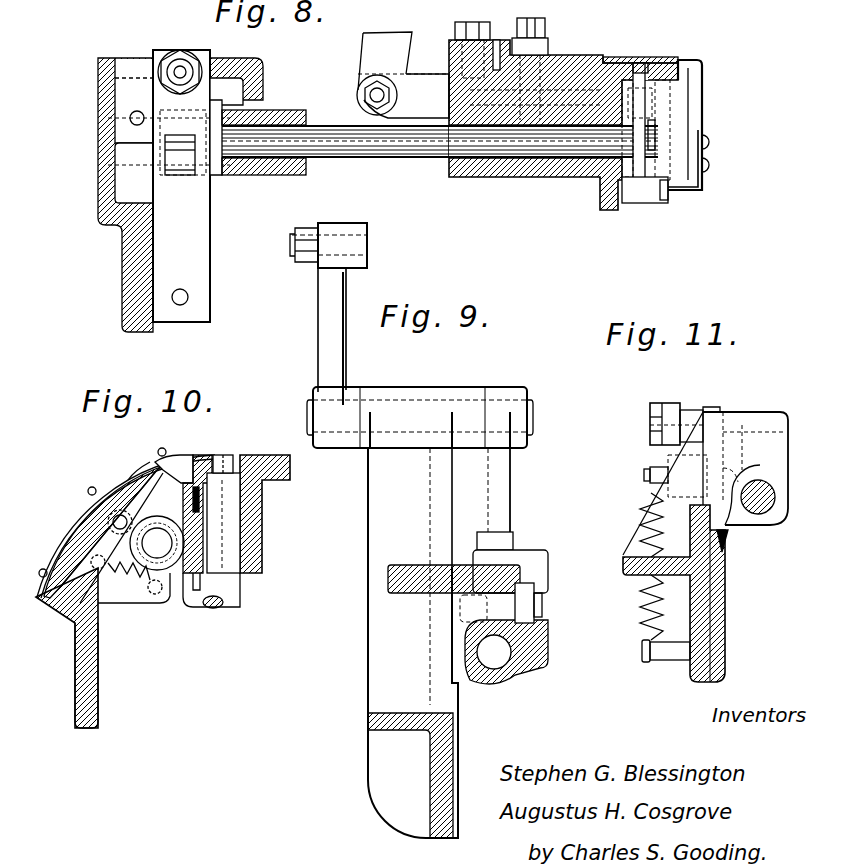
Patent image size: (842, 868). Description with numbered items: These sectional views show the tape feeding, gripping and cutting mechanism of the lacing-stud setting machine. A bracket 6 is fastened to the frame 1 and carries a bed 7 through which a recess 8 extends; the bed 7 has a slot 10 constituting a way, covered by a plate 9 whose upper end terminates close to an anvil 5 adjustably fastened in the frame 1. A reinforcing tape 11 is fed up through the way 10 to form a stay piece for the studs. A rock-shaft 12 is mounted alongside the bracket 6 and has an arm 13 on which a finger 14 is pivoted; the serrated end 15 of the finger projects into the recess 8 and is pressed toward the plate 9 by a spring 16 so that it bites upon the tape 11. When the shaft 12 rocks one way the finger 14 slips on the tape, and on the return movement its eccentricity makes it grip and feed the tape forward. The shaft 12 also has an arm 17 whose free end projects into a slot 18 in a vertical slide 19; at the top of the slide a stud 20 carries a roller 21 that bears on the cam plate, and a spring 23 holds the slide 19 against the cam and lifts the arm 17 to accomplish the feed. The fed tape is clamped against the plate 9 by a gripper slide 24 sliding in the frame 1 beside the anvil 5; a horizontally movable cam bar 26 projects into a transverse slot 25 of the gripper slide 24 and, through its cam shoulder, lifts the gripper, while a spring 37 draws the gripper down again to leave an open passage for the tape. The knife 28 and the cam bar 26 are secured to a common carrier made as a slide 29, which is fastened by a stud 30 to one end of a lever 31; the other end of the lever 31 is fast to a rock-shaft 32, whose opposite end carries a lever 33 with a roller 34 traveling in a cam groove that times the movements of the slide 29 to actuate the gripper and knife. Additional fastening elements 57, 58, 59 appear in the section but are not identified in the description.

In FIG. 8, the frame 1 is at (530, 178).
In FIG. 9, the frame 1 is at (380, 524).
In FIG. 10, the frame 1 is at (263, 520).
In FIG. 11, the frame 1 is at (725, 613).
In FIG. 10, the anvil 5 is at (226, 460).
In FIG. 10, the bracket 6 is at (100, 668).
In FIG. 8, the bed 7 is at (657, 83).
In FIG. 10, the bed 7 is at (75, 545).
In FIG. 10, the recess 8 is at (173, 463).
In FIG. 8, the plate 9 is at (662, 57).
In FIG. 10, the plate 9 is at (130, 481).
In FIG. 10, the slot 10 is at (38, 598).
In FIG. 8, the reinforcing tape 11 is at (615, 57).
In FIG. 8, the rock-shaft 12 is at (380, 158).
In FIG. 10, the rock-shaft 12 is at (159, 547).
In FIG. 11, the rock-shaft 12 is at (758, 514).
In FIG. 8, the arm 13 is at (628, 205).
In FIG. 10, the arm 13 is at (120, 562).
In FIG. 8, the finger 14 is at (662, 182).
In FIG. 10, the finger 14 is at (108, 522).
In FIG. 8, the serrated end 15 is at (639, 60).
In FIG. 10, the serrated end 15 is at (152, 463).
In FIG. 10, the spring 16 is at (152, 596).
In FIG. 8, the arm 17 is at (177, 170).
In FIG. 11, the arm 17 is at (728, 547).
In FIG. 8, the slot 18 is at (188, 185).
In FIG. 8, the slide 19 is at (204, 246).
In FIG. 11, the slide 19 is at (717, 410).
In FIG. 8, the stud 20 is at (177, 68).
In FIG. 11, the stud 20 is at (697, 412).
In FIG. 8, the roller 21 is at (198, 59).
In FIG. 11, the roller 21 is at (668, 407).
In FIG. 11, the spring 23 is at (645, 611).
In FIG. 10, the gripper slide 24 is at (223, 524).
In FIG. 10, the slot 25 is at (200, 513).
In FIG. 10, the cam bar 26 is at (200, 497).
In FIG. 10, the knife 28 is at (216, 455).
In FIG. 8, the slide 29 is at (403, 96).
In FIG. 9, the slide 29 is at (527, 590).
In FIG. 8, the stud 30 is at (369, 94).
In FIG. 9, the stud 30 is at (545, 600).
In FIG. 8, the lever 31 is at (364, 52).
In FIG. 9, the lever 31 is at (506, 492).
In FIG. 9, the rock-shaft 32 is at (532, 420).
In FIG. 9, the lever 33 is at (347, 341).
In FIG. 9, the roller 34 is at (368, 233).
In FIG. 8, the spring 37 is at (703, 193).
In FIG. 8, the bolt 57 is at (545, 19).
In FIG. 8, the washer 58 is at (547, 42).
In FIG. 8, the bolt 59 is at (522, 48).